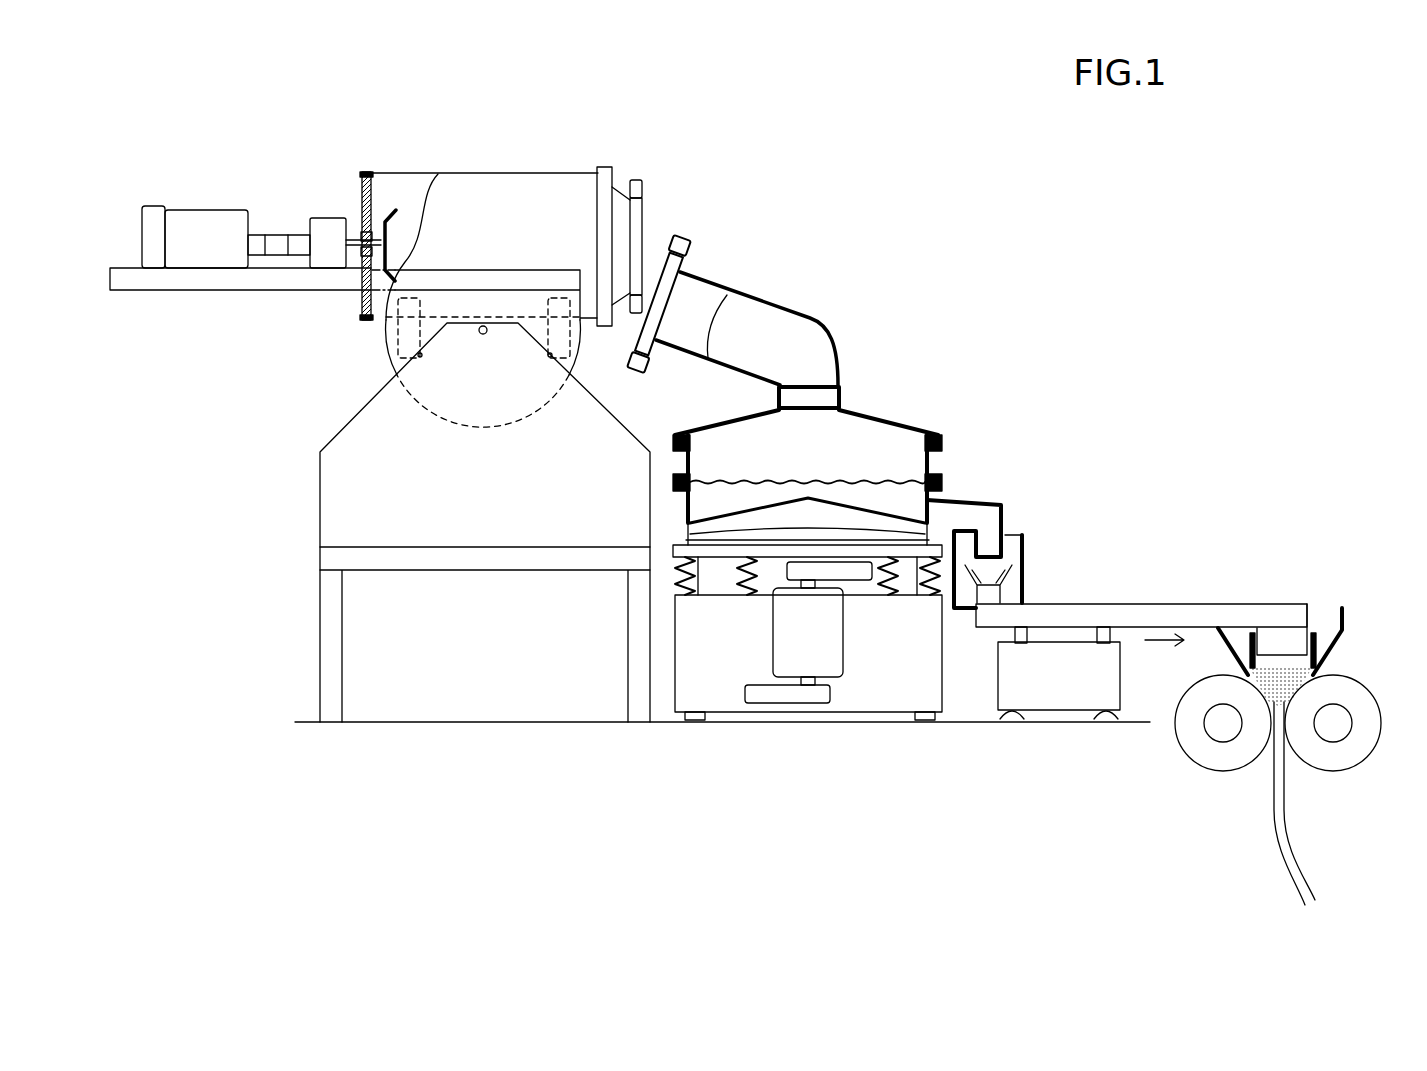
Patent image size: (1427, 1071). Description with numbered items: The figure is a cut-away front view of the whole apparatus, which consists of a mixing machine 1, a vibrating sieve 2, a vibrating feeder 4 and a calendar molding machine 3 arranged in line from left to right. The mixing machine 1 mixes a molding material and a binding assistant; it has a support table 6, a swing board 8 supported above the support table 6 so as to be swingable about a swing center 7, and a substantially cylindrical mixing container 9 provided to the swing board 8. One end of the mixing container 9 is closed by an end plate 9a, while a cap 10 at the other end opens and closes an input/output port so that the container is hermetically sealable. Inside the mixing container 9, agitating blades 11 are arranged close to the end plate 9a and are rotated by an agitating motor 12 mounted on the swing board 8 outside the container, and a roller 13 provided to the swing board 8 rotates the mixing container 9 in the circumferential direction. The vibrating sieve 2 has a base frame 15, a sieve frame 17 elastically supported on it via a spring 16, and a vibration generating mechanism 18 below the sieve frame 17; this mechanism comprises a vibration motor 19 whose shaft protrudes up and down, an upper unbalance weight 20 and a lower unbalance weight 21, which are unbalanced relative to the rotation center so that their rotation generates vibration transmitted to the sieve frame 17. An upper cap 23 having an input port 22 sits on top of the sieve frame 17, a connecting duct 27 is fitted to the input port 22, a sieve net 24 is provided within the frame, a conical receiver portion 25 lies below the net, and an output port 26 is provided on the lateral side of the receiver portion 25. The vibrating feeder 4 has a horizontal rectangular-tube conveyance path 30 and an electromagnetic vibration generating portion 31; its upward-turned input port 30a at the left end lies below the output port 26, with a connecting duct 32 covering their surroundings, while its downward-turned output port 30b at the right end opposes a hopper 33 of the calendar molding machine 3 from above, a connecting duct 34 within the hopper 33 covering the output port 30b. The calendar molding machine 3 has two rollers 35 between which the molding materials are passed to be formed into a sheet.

The mixing machine 1 is at (503, 157).
The vibrating sieve 2 is at (935, 420).
The calendar molding machine 3 is at (1367, 603).
The vibrating feeder 4 is at (1138, 597).
The support table 6 is at (320, 502).
The swing center 7 is at (483, 336).
The swing board 8 is at (232, 292).
The mixing container 9 is at (462, 172).
The end plate 9a is at (362, 212).
The cap 10 is at (642, 222).
The agitating blades 11 is at (393, 210).
The agitating motor 12 is at (198, 210).
The roller 13 is at (388, 338).
The base frame 15 is at (678, 663).
The spring 16 is at (738, 579).
The sieve frame 17 is at (936, 462).
The vibration generating mechanism 18 is at (848, 643).
The vibration motor 19 is at (838, 662).
The upper unbalance weight 20 is at (860, 575).
The lower unbalance weight 21 is at (778, 700).
The input port 22 is at (840, 390).
The upper cap 23 is at (900, 426).
The sieve net 24 is at (868, 480).
The receiver portion 25 is at (766, 497).
The output port 26 is at (1003, 518).
The connecting duct 27 is at (806, 318).
The conveyance path 30 is at (1198, 603).
The input port 30a is at (1015, 578).
The output port 30b is at (1283, 643).
The electromagnetic vibration generating portion 31 is at (1063, 697).
The connecting duct 32 is at (1025, 548).
The hopper 33 is at (1345, 646).
The connecting duct 34 is at (1316, 640).
The roller 35 is at (1210, 773).